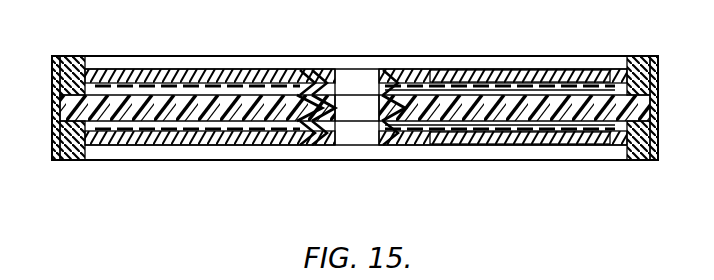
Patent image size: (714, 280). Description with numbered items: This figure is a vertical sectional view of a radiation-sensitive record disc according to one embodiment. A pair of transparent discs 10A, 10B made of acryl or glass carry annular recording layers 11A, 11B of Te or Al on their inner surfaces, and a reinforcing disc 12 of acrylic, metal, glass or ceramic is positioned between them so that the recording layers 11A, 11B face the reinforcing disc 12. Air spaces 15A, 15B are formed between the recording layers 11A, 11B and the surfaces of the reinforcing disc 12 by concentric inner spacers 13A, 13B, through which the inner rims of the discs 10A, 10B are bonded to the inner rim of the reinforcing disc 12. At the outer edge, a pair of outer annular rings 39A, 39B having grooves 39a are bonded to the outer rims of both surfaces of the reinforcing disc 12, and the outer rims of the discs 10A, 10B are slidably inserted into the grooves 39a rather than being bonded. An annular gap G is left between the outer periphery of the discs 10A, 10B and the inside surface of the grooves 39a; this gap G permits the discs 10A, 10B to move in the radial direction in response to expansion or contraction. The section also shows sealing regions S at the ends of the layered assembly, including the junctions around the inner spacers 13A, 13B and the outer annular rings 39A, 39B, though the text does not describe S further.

The reinforcing disc 12 is at (194, 112).
The inner spacer 13A is at (397, 82).
The inner spacer 13B is at (402, 147).
The recording layer 11A is at (443, 86).
The recording layer 11B is at (577, 136).
The disc 10A is at (487, 74).
The disc 10B is at (515, 147).
The air space 15A is at (536, 83).
The air space 15B is at (460, 147).
The outer annular ring 39A is at (637, 58).
The outer annular ring 39B is at (643, 160).
The groove 39a is at (660, 74).
The annular gap G is at (73, 57).
The seal S is at (52, 78).